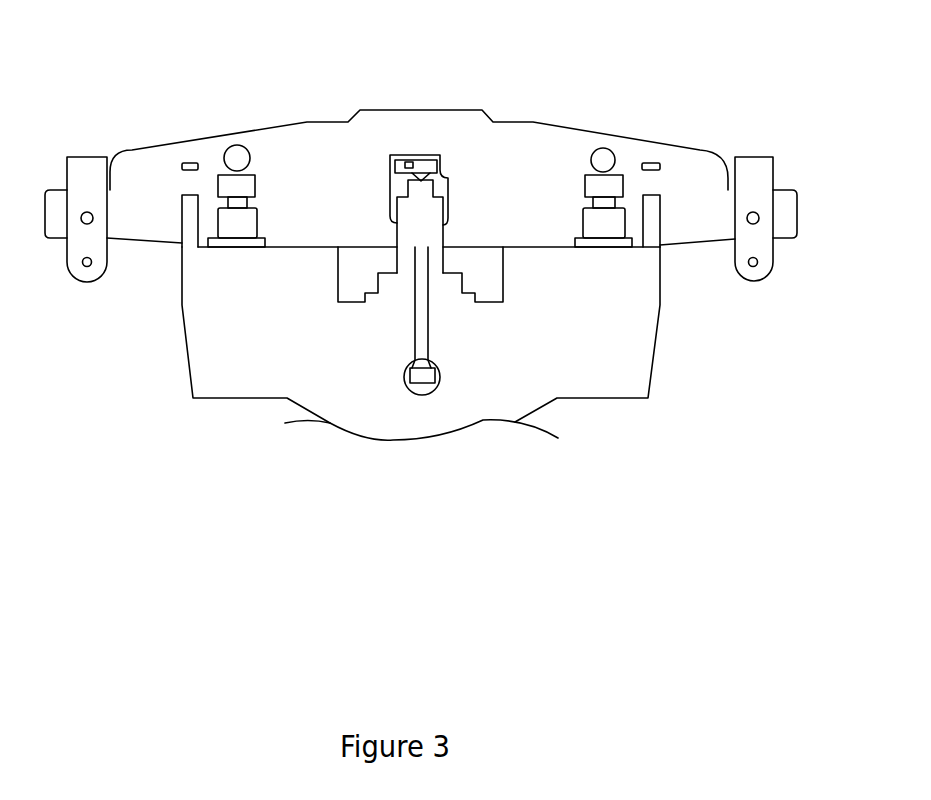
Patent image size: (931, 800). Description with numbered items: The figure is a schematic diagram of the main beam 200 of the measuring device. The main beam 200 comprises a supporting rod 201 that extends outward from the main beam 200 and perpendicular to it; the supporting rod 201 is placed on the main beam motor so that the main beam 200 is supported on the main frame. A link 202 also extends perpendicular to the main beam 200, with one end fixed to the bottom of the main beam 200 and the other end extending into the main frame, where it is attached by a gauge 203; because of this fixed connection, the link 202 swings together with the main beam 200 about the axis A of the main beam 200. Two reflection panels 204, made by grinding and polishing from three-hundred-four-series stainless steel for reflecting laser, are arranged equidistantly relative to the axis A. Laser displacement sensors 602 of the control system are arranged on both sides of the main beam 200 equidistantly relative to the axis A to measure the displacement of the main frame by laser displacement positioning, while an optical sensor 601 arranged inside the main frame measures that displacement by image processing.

The main beam 200 is at (512, 155).
The supporting rod 201 is at (243, 157).
The link 202 is at (423, 308).
The gauge 203 is at (423, 373).
The reflection panel 204 is at (187, 162).
The optical sensor 601 is at (405, 368).
The laser displacement sensor 602 is at (190, 220).